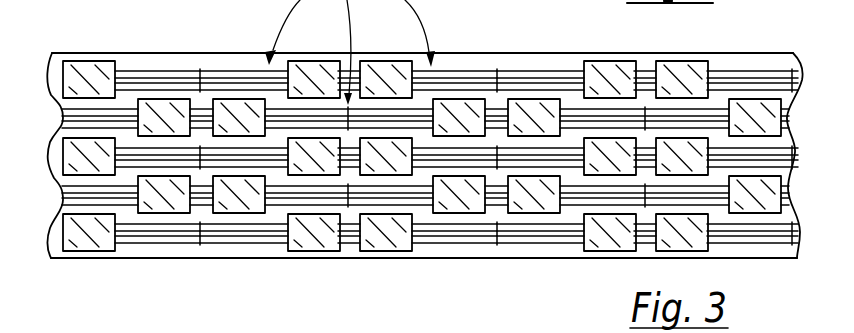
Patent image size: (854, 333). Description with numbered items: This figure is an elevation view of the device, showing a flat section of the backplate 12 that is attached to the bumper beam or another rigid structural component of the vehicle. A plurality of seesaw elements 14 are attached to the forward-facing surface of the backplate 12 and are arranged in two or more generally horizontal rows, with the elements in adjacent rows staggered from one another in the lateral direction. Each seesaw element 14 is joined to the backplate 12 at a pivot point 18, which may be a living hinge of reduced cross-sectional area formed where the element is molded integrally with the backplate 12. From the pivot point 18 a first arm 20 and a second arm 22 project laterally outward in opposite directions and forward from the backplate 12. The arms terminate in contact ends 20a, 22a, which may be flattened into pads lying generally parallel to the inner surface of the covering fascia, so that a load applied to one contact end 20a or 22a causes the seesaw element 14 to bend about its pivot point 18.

The backplate 12 is at (172, 59).
The seesaw element 14 is at (450, 252).
The pivot point 18 is at (200, 72).
The first arm 20 is at (228, 71).
The contact end 20a is at (300, 67).
The second arm 22 is at (132, 72).
The contact end 22a is at (92, 70).